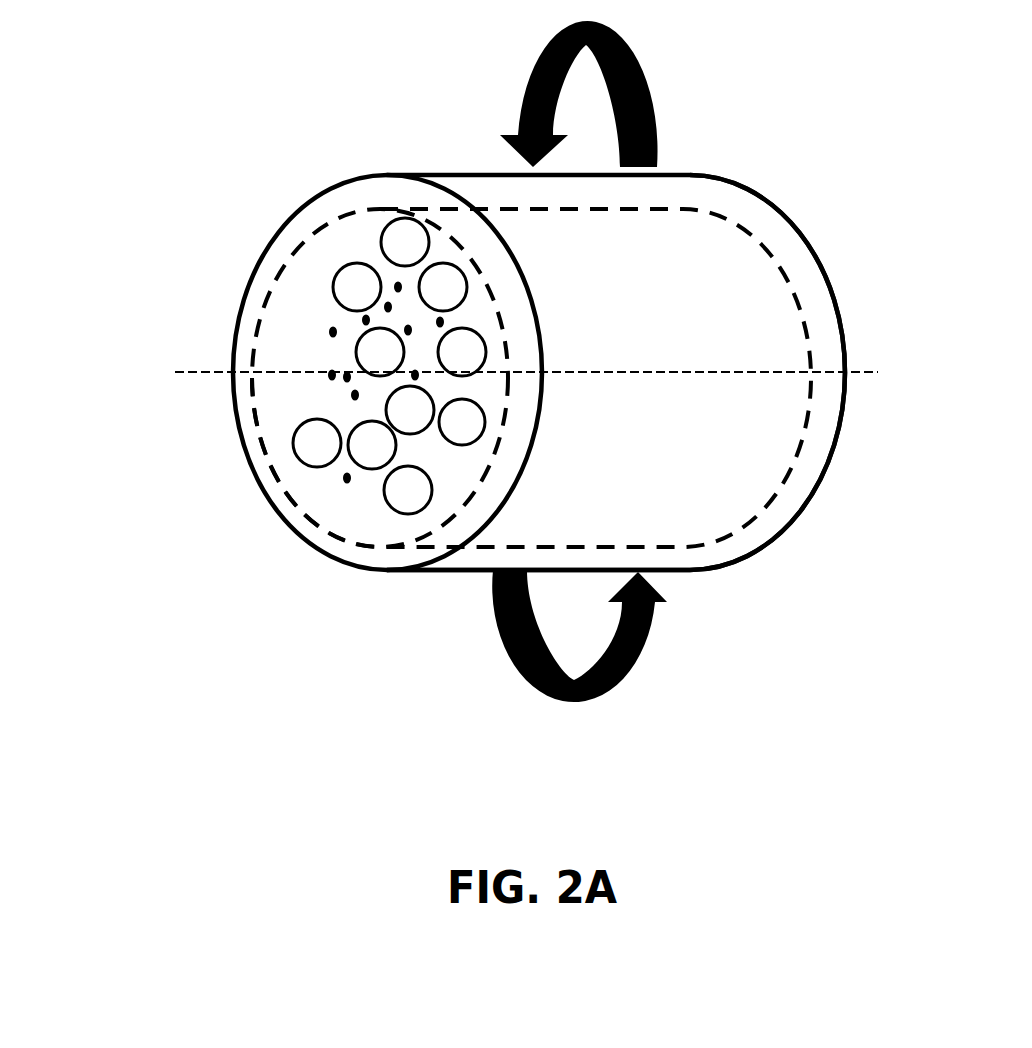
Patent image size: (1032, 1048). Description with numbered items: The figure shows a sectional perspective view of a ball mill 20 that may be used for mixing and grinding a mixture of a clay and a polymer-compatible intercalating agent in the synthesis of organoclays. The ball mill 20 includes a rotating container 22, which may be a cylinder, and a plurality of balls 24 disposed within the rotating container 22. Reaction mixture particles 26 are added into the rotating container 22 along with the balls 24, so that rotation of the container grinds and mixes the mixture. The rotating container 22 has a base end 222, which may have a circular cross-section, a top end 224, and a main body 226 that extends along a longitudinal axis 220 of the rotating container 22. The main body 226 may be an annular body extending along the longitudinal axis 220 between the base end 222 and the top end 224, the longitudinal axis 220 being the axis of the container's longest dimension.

The ball mill 20 is at (260, 44).
The rotating container 22 is at (442, 175).
The balls 24 is at (306, 454).
The reaction mixture particles 26 is at (333, 332).
The longitudinal axis 220 is at (873, 376).
The base end 222 is at (795, 460).
The top end 224 is at (352, 535).
The main body 226 is at (462, 570).